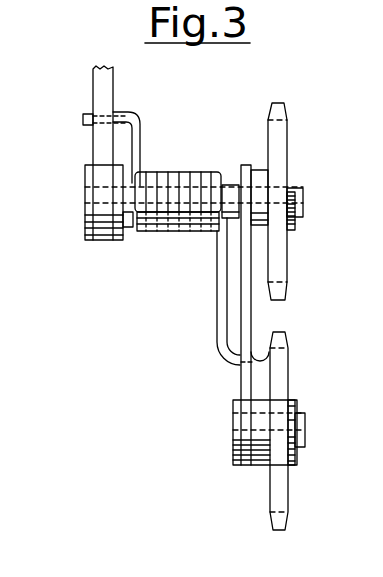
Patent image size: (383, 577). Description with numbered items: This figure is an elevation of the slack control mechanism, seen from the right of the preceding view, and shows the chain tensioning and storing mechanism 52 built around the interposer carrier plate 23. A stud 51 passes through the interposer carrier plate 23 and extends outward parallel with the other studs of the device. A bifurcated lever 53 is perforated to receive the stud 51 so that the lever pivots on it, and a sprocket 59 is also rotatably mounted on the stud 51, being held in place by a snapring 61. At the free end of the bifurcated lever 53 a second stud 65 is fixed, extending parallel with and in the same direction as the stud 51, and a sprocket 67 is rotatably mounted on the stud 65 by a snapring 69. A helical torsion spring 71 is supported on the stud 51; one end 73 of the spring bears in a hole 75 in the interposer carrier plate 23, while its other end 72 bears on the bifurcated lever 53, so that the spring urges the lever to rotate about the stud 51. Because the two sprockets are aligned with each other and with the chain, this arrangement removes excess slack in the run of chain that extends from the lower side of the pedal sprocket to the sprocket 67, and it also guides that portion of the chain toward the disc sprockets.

The interposer carrier plate 23 is at (100, 66).
The end of helical torsion spring 73 is at (83, 120).
The hole 75 is at (125, 117).
The helical torsion spring 71 is at (176, 172).
The sprocket 59 is at (280, 131).
The snapring 61 is at (289, 175).
The stud 51 is at (302, 209).
The chain tensioning and storing mechanism 52 is at (188, 302).
The bifurcated lever 53 is at (251, 317).
The end of helical torsion spring 72 is at (263, 352).
The stud 65 is at (304, 432).
The snapring 69 is at (294, 457).
The sprocket 67 is at (291, 516).